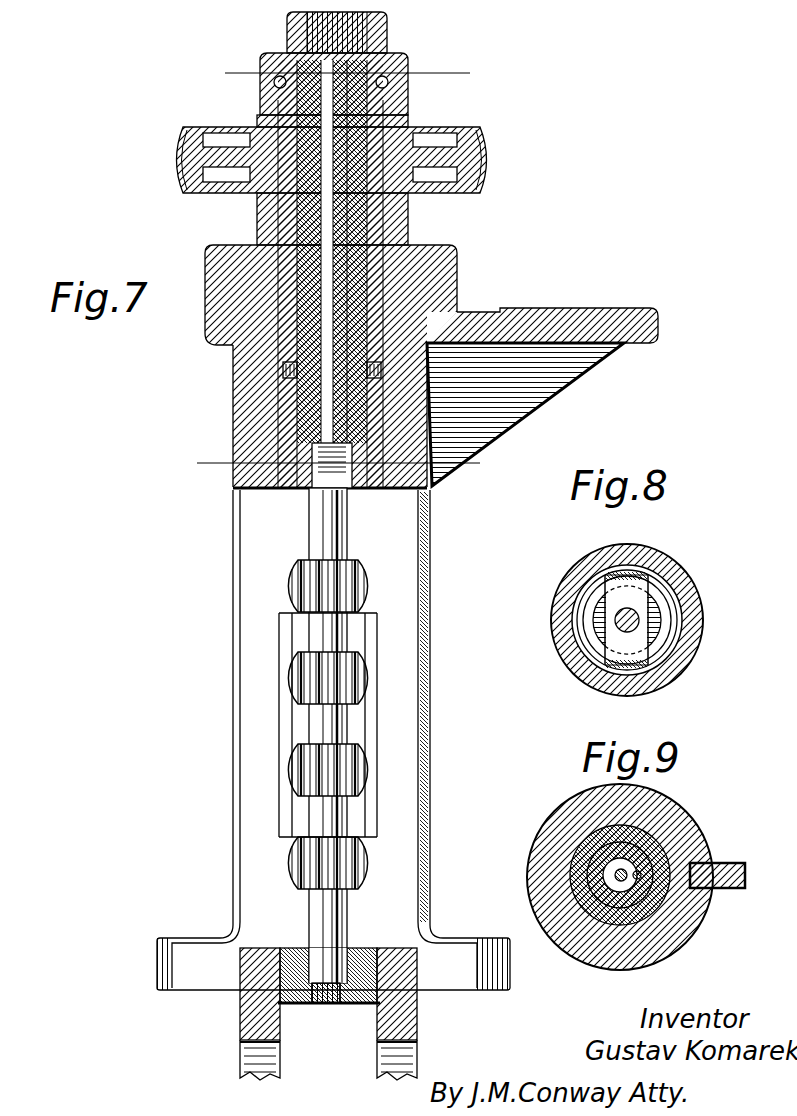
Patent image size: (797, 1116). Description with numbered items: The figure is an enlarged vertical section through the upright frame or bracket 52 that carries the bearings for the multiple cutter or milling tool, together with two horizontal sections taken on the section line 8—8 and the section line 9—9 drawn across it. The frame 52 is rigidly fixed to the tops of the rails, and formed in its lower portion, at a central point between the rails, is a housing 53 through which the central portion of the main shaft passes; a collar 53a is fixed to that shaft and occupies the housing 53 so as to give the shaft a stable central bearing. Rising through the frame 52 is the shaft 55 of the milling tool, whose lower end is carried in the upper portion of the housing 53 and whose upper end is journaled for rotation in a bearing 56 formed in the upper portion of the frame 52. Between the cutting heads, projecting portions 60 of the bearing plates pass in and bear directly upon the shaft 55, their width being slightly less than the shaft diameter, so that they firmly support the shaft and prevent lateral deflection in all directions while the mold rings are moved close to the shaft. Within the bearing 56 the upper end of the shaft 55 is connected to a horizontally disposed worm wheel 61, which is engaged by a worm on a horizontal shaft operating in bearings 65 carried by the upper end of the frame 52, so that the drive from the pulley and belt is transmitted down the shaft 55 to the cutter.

In FIG. 7, the section line 8— 8 is at (343, 75).
In FIG. 7, the section line 9— 9 is at (341, 467).
In FIG. 7, the upright frame 52 is at (246, 388).
In FIG. 9, the upright frame 52 is at (562, 812).
In FIG. 7, the housing 53 is at (242, 1034).
In FIG. 7, the collar 53a is at (297, 1004).
In FIG. 7, the shaft of the multiple cutter 55 is at (322, 527).
In FIG. 9, the shaft of the multiple cutter 55 is at (598, 922).
In FIG. 7, the bearing 56 is at (220, 253).
In FIG. 7, the projecting portions 60 is at (305, 628).
In FIG. 7, the worm wheel 61 is at (490, 160).
In FIG. 7, the bearings 65 is at (634, 320).